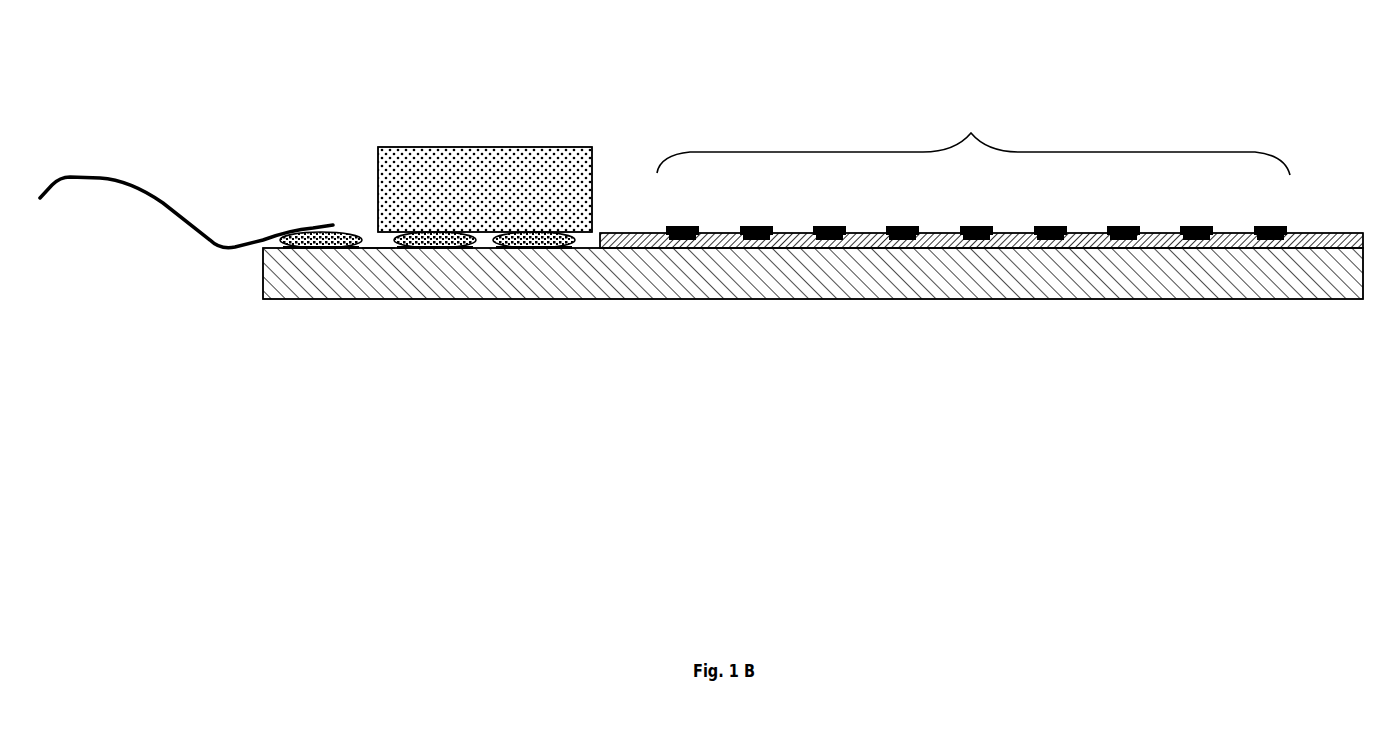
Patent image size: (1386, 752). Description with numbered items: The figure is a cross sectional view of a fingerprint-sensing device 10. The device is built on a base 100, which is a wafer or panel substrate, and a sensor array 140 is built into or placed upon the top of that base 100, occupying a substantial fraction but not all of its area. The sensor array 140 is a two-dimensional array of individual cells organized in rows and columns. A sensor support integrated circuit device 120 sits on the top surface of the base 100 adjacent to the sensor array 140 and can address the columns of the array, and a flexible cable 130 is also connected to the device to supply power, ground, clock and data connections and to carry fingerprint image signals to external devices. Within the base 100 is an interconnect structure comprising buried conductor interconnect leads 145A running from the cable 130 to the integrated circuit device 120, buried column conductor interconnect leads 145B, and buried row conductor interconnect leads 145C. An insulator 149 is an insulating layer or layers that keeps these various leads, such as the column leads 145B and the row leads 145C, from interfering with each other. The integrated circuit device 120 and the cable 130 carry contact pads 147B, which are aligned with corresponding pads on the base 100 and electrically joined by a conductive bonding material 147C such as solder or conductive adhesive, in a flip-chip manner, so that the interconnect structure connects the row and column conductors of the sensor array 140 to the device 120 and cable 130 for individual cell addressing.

The fingerprint-sensing device 10 is at (973, 133).
The base 100 is at (1322, 300).
The sensor support integrated circuit device 120 is at (475, 143).
The flexible cable 130 is at (174, 195).
The sensor array 140 is at (1358, 232).
The buried conductor interconnect leads 145A is at (377, 258).
The buried column conductor interconnect leads 145B is at (617, 255).
The buried row conductor interconnect leads 145C is at (1150, 255).
The contact pads 147B is at (510, 223).
The conductive bonding material 147C is at (310, 250).
The insulator 149 is at (794, 253).